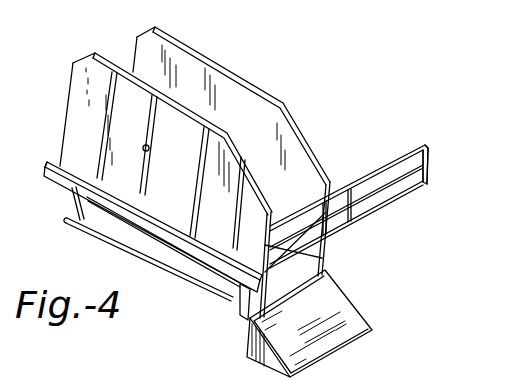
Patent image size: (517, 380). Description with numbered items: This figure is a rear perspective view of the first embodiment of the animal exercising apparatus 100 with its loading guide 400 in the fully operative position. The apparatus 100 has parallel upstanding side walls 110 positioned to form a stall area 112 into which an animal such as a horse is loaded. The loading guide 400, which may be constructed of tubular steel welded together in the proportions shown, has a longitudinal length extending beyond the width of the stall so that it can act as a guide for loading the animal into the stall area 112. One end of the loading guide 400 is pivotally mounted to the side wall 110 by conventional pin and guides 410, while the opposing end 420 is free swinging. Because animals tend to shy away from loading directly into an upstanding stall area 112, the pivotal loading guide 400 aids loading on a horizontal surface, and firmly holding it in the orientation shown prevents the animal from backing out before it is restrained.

The animal exercising apparatus 100 is at (300, 33).
The side wall 110 is at (149, 150).
The stall area 112 is at (306, 200).
The loading guide 400 is at (373, 216).
The pin and guides 410 is at (262, 240).
The free swinging end 420 is at (429, 168).